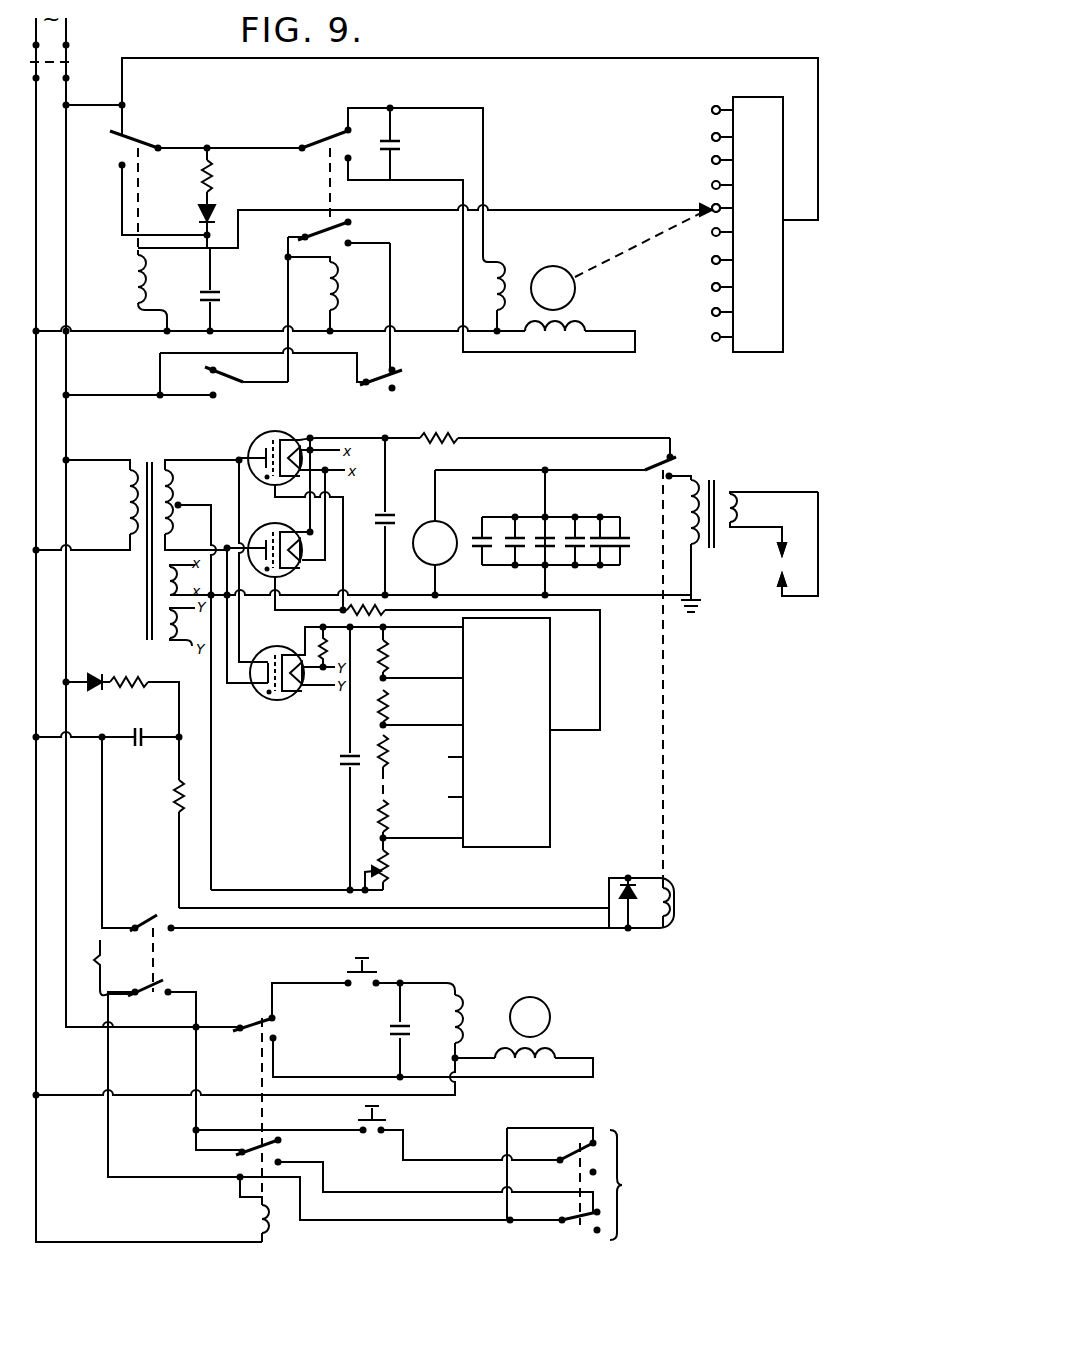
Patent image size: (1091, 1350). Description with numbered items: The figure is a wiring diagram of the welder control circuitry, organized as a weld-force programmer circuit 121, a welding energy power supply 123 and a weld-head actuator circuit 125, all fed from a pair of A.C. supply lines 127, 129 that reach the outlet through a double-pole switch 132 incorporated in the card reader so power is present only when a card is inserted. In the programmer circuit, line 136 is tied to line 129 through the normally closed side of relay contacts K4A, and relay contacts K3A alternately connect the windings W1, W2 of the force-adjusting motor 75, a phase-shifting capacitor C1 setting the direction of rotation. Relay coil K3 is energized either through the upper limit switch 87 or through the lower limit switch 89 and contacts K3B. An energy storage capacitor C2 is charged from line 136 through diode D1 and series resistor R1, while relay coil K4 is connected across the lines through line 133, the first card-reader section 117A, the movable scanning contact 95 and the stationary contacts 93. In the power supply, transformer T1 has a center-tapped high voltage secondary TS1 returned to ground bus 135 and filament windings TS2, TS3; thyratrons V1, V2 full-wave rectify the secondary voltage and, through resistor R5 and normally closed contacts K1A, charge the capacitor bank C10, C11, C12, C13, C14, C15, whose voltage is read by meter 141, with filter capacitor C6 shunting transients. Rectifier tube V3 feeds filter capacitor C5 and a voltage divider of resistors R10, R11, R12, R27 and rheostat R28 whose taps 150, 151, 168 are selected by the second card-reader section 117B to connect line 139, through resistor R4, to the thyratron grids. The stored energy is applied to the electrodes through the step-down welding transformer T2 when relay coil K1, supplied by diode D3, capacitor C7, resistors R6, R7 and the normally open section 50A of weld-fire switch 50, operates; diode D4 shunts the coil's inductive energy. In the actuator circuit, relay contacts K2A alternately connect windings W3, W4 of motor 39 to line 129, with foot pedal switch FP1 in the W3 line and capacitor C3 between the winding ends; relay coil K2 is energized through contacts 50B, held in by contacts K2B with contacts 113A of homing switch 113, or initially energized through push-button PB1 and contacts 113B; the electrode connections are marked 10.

The electrodes 10 is at (778, 553).
The motor 39 is at (544, 1000).
The weld-fire switch 50 is at (102, 967).
The normally open section of weld-fire switch 50A is at (152, 913).
The contacts of weld firing switch 50B is at (174, 1078).
The motor 75 is at (577, 287).
The upper limit switch 87 is at (238, 386).
The lower limit switch 89 is at (367, 387).
The stationary scannable contacts 93 is at (710, 158).
The movable force scanning contact 95 is at (705, 202).
The homing switch 113 is at (582, 1184).
The switch contacts 113A is at (588, 1225).
The switch contacts 113B is at (572, 1152).
The first section of card reader 117A is at (740, 96).
The second section of card reader 117B is at (512, 848).
The weld-force programmer circuit 121 is at (570, 57).
The welding energy power supply 123 is at (686, 698).
The weld-head actuator circuit 125 is at (628, 1080).
The A.C. power supply line 127 is at (36, 184).
The A.C. power supply line 129 is at (66, 207).
The double-pole, single-throw switch 132 is at (67, 54).
The line 133 is at (122, 73).
The common or ground bus 135 is at (625, 616).
The line 136 is at (242, 147).
The line 139 is at (601, 686).
The meter 141 is at (430, 567).
The tap 150 is at (455, 629).
The tap 151 is at (458, 681).
The tap 168 is at (466, 833).
The relay contacts K4A is at (135, 138).
The relay contacts K3A is at (328, 132).
The relay contacts K3B is at (358, 230).
The relay contacts K1A is at (681, 453).
The relay contacts K2A is at (268, 1015).
The relay contacts K2B is at (282, 1147).
The relay coil K1 is at (677, 898).
The relay coil K2 is at (253, 1214).
The relay coil K3 is at (342, 282).
The relay coil K4 is at (130, 287).
The series resistor R1 is at (211, 174).
The current limiting resistor R4 is at (366, 606).
The charging current limiting resistor R5 is at (434, 437).
The charging current limiting resistor R6 is at (125, 690).
The current limiting resistor R7 is at (175, 790).
The resistor R10 is at (391, 655).
The resistor R11 is at (391, 695).
The resistor R12 is at (391, 739).
The resistor R27 is at (391, 818).
The rheostat R28 is at (391, 867).
The phase-shifting capacitor C1 is at (398, 148).
The energy storage capacitor C2 is at (219, 292).
The phase-shifting capacitor C3 is at (396, 1040).
The capacitor C5 is at (340, 766).
The filter capacitor C6 is at (386, 512).
The filter capacitor C7 is at (138, 748).
The energy storage capacitor C10 is at (480, 531).
The energy storage capacitor C11 is at (515, 559).
The energy storage capacitor C12 is at (542, 527).
The energy storage capacitor C13 is at (573, 532).
The energy storage capacitor C14 is at (604, 559).
The energy storage capacitor C15 is at (621, 534).
The diode D1 is at (202, 211).
The rectifying diode D3 is at (98, 678).
The diode D4 is at (609, 894).
The transformer T1 is at (150, 456).
The step-down welding transformer T2 is at (712, 552).
The center-tapped high voltage secondary TS1 is at (172, 495).
The filament winding TS2 is at (165, 577).
The filament winding TS3 is at (175, 638).
The thyratron V1 is at (262, 442).
The thyratron V2 is at (273, 525).
The rectifier tube V3 is at (277, 700).
The motor winding W1 is at (506, 268).
The motor winding W2 is at (582, 326).
The motor winding W3 is at (463, 1002).
The motor winding W4 is at (553, 1050).
The foot pedal switch FP1 is at (377, 969).
The push-button switch PB1 is at (388, 1121).